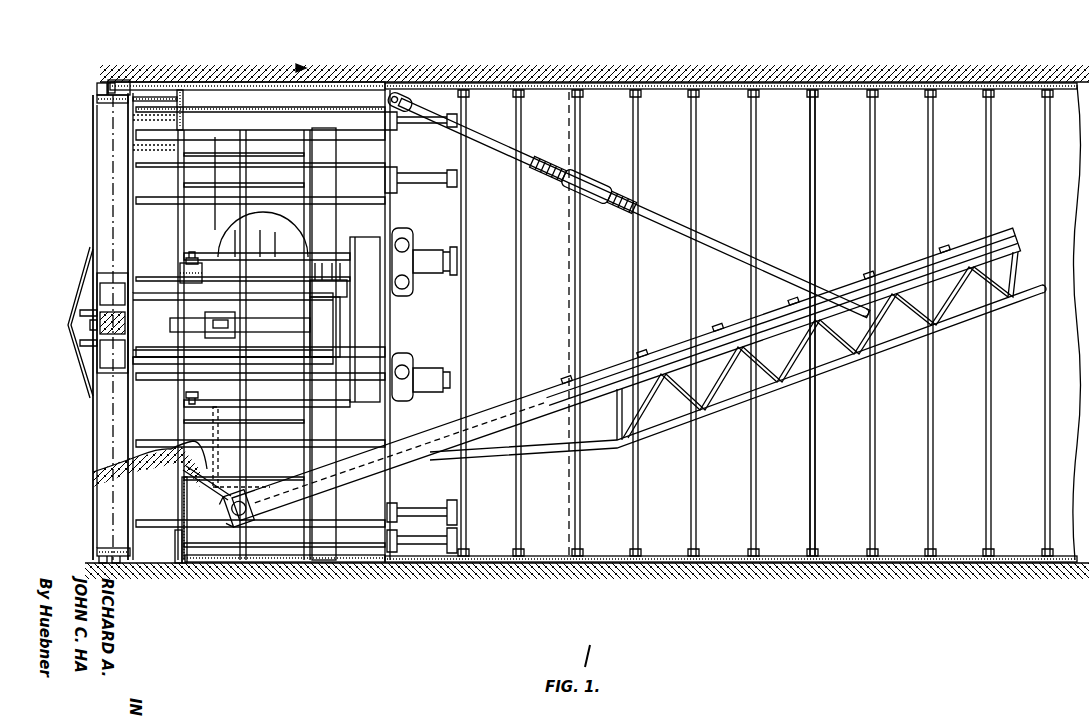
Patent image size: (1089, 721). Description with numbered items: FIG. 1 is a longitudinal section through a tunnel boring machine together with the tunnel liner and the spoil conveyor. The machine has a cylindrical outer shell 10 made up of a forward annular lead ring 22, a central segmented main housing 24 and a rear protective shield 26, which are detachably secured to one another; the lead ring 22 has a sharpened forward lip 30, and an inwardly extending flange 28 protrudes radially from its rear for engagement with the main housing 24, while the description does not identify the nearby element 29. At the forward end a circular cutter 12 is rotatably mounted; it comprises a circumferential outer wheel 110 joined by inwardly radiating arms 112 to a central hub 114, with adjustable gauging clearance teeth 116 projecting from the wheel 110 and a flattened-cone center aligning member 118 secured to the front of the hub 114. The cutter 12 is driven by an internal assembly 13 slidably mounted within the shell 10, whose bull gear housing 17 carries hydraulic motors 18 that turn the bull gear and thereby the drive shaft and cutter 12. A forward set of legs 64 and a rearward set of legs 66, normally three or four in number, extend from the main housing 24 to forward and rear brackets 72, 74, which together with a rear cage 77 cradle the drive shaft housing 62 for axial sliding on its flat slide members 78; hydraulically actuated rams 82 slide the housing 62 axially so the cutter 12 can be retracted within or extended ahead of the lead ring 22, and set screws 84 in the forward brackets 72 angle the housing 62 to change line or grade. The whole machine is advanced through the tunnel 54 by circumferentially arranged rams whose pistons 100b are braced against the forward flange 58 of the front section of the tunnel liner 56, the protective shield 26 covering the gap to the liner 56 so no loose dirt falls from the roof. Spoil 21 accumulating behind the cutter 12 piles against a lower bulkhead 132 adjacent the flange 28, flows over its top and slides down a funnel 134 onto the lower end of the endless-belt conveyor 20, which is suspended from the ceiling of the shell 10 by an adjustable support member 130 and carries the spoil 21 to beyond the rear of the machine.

The cylindrical outer shell 10 is at (324, 80).
The circular cutter 12 is at (92, 203).
The internal assembly 13 is at (147, 293).
The bull gear housing 17 is at (370, 345).
The motors 18 is at (415, 245).
The conveyor 20 is at (600, 357).
The spoil 21 is at (150, 473).
The forward annular lead ring 22 is at (153, 83).
The central segmented main housing 24 is at (249, 85).
The rear protective shield 26 is at (454, 87).
The inwardly extending flange 28 is at (182, 100).
The frame corner member 29 is at (184, 108).
The forward lip 30 is at (113, 82).
The tunnel 54 is at (837, 86).
The tunnel liner 56 is at (614, 90).
The forward flange 58 is at (467, 92).
The drive shaft housing 62 is at (168, 360).
The forward set of legs 64 is at (206, 165).
The rearward set of legs 66 is at (334, 178).
The forward brackets 72 is at (185, 270).
The rear brackets 74 is at (328, 266).
The rear cage 77 is at (330, 323).
The slide members 78 is at (233, 325).
The hydraulically actuated rams 82 is at (285, 335).
The set screws 84 is at (194, 258).
The piston 100b is at (425, 178).
The circumferential outer wheel 110 is at (100, 548).
The inwardly radiating arms 112 is at (97, 240).
The central hub 114 is at (97, 287).
The adjustable gauging clearance teeth 116 is at (97, 88).
The center aligning member 118 is at (75, 350).
The adjustable support member 130 is at (660, 210).
The lower bulkhead 132 is at (182, 505).
The funnel 134 is at (220, 462).